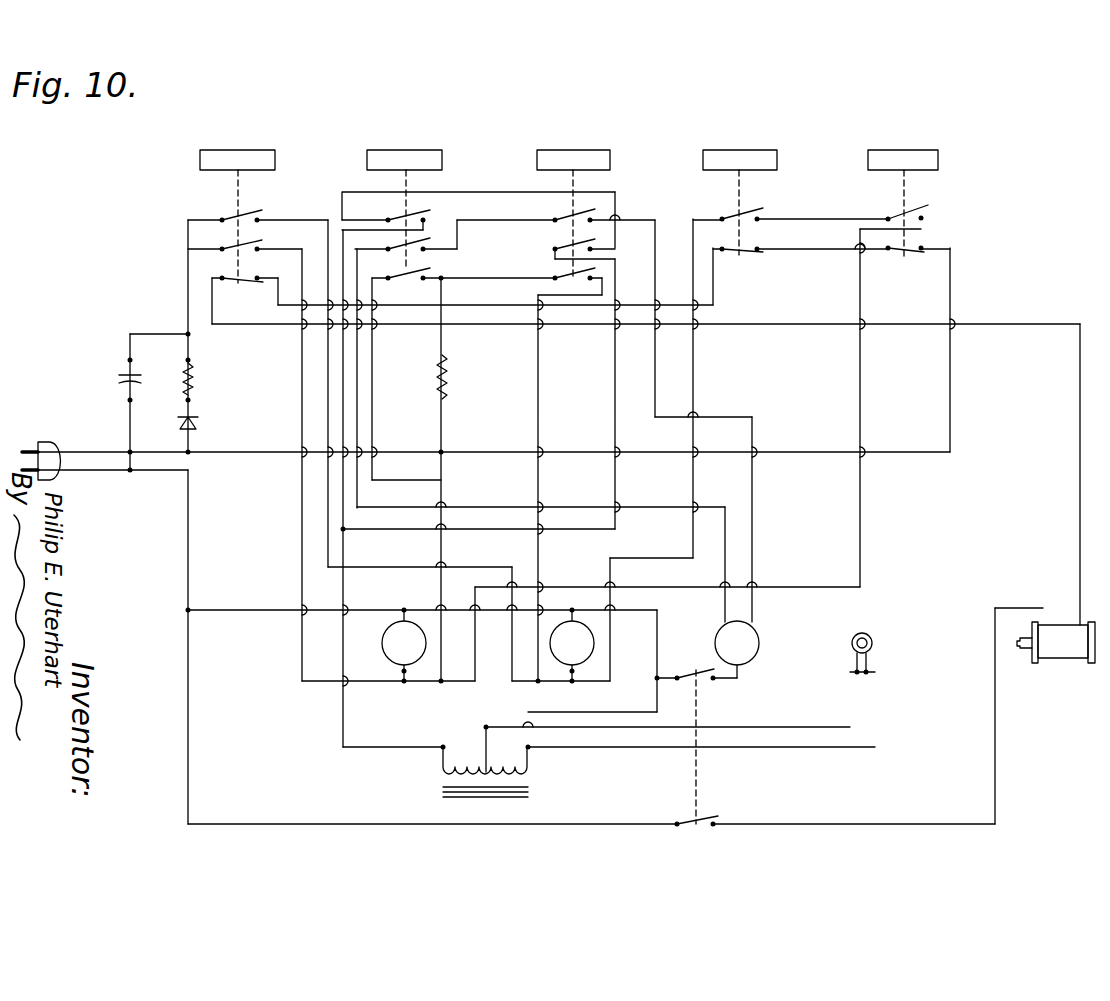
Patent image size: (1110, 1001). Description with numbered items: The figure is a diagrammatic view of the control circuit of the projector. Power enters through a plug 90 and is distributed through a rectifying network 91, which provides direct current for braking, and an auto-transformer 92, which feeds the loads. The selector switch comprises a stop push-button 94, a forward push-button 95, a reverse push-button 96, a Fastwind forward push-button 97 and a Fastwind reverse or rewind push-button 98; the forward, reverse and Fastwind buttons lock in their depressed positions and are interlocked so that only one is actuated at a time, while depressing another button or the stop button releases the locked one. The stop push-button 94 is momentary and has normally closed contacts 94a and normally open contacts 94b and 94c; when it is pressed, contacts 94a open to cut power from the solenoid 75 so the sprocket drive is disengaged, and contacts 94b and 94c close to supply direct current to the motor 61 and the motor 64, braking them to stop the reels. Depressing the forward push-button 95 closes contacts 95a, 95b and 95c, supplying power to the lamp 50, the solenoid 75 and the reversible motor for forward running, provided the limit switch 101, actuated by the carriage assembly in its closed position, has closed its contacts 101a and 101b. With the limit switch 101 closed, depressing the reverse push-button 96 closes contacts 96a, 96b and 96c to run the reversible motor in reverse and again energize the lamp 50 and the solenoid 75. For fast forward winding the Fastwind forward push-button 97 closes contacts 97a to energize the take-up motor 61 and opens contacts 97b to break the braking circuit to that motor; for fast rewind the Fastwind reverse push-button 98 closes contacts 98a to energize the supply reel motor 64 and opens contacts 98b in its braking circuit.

The stop push-button 94 is at (200, 158).
The normally closed contacts 94a is at (236, 276).
The normally open contacts 94b is at (233, 246).
The normally open contacts 94c is at (235, 215).
The forward push-button 95 is at (367, 158).
The contacts 95a is at (400, 215).
The contacts 95b is at (410, 240).
The contacts 95c is at (420, 270).
The reverse push-button 96 is at (537, 158).
The contacts 96a is at (568, 215).
The contacts 96b is at (567, 246).
The contacts 96c is at (570, 274).
The Fastwind forward push-button 97 is at (703, 160).
The contacts 97a is at (730, 213).
The contacts 97b is at (750, 256).
The Fastwind reverse push-button 98 is at (868, 160).
The contacts 98a is at (905, 210).
The contacts 98b is at (913, 255).
The plug 90 is at (52, 456).
The rectifying network 91 is at (198, 400).
The motor 61 is at (383, 642).
The motor 64 is at (566, 655).
The limit switch 101 is at (693, 659).
The contacts 101a is at (705, 680).
The contacts 101b is at (708, 812).
The auto-transformer 92 is at (440, 773).
The lamp 50 is at (870, 640).
The solenoid 75 is at (1062, 655).